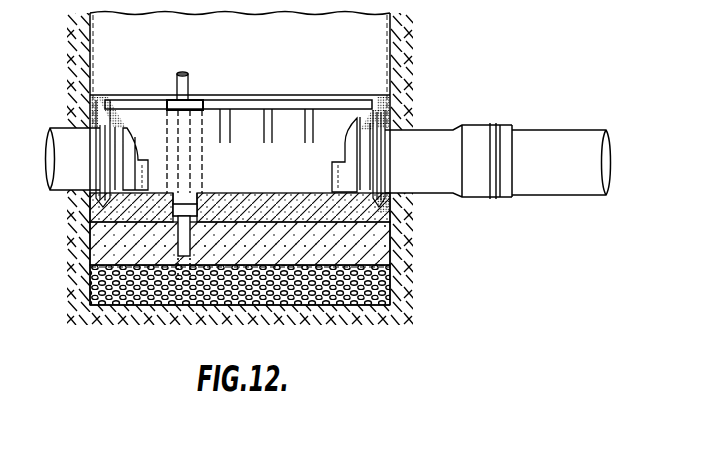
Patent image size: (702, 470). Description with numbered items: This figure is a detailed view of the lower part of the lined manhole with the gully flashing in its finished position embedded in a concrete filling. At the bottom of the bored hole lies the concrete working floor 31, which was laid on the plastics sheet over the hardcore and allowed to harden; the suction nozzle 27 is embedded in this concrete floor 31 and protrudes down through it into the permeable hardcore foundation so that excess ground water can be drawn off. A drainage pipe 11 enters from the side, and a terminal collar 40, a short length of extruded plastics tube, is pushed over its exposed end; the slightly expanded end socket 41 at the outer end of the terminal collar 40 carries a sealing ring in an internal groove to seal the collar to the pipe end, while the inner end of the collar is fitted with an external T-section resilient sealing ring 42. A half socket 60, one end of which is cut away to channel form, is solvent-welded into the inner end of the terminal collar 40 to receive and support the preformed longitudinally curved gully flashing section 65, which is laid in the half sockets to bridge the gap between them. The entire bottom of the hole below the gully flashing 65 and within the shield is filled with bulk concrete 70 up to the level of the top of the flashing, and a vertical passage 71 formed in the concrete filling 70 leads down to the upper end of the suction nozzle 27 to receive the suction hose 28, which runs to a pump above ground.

The drainage pipe 11 is at (566, 145).
The suction nozzle 27 is at (186, 283).
The suction hose 28 is at (189, 89).
The concrete working floor 31 is at (103, 248).
The terminal collar 40 is at (441, 188).
The expanded end socket 41 is at (490, 126).
The T-section resilient sealing ring 42 is at (380, 152).
The half socket 60 is at (332, 178).
The gully flashing section 65 is at (284, 124).
The bulk concrete filling 70 is at (393, 112).
The vertical passage 71 is at (204, 165).